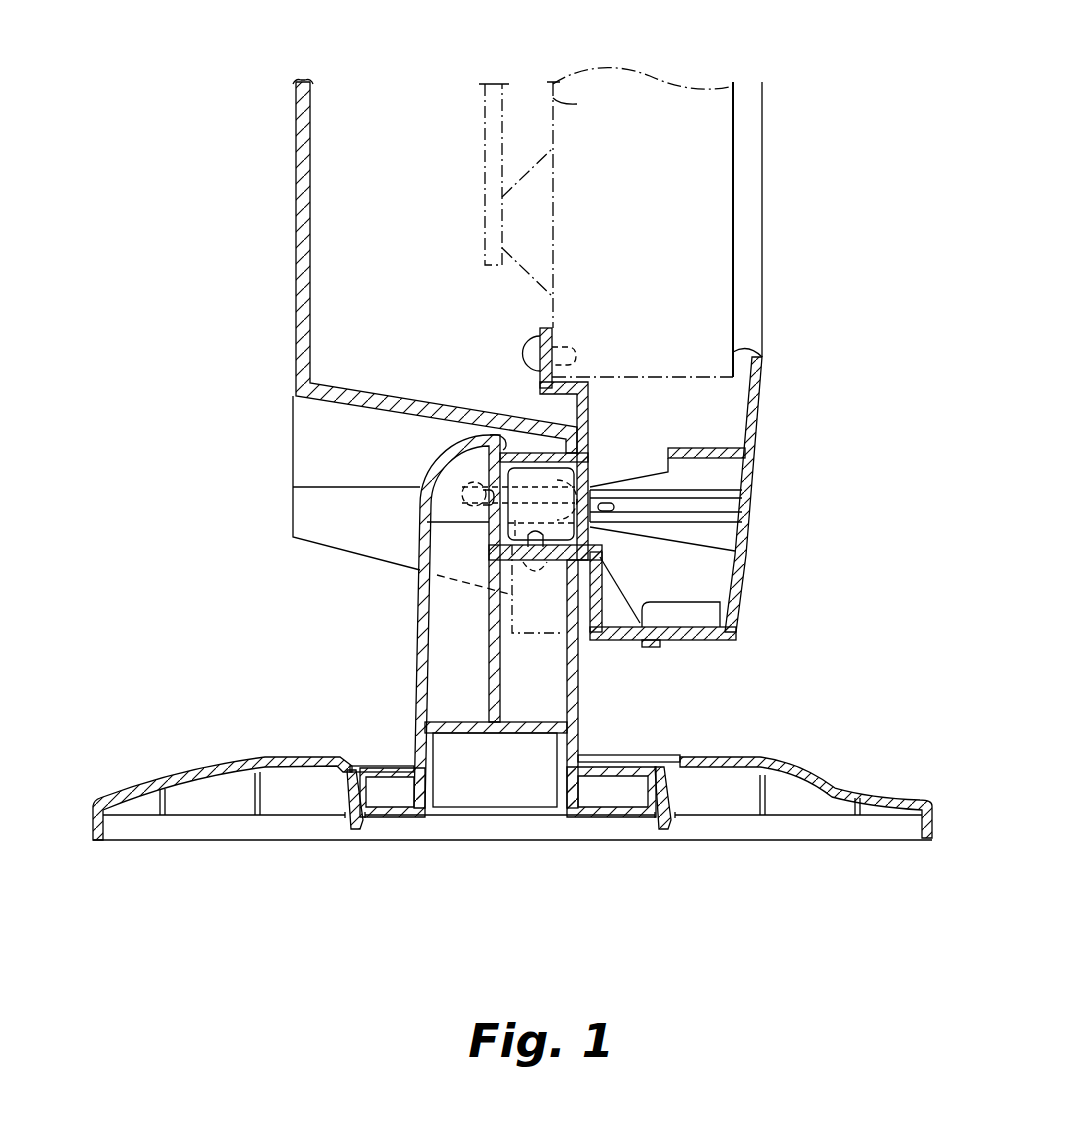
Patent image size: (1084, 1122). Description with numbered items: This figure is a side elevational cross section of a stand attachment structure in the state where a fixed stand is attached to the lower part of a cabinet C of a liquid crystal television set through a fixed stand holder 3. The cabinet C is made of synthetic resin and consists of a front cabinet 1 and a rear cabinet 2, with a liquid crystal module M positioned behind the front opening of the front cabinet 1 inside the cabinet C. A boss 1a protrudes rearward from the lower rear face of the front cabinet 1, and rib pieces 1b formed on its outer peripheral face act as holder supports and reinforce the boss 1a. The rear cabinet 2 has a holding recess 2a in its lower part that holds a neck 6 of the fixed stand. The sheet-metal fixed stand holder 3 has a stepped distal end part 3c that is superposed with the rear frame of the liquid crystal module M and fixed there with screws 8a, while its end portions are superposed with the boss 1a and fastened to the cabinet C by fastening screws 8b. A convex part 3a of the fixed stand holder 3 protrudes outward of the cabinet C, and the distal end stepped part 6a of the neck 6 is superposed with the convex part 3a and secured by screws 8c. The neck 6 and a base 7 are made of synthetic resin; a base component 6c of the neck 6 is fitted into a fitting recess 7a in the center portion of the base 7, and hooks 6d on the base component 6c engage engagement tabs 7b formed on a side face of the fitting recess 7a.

The front cabinet 1 is at (763, 390).
The boss 1a is at (700, 493).
The rib piece 1b is at (678, 503).
The rear cabinet 2 is at (297, 291).
The holding recess 2a is at (318, 443).
The fixed stand holder 3 is at (590, 418).
The convex part 3a is at (527, 450).
The stepped distal end part 3c is at (540, 330).
The neck 6 is at (418, 658).
The distal end stepped part 6a is at (503, 437).
The base component 6c is at (622, 762).
The hook 6d is at (347, 820).
The base 7 is at (238, 760).
The fitting recess 7a is at (602, 817).
The engagement tab 7b is at (340, 788).
The screw 8a is at (531, 340).
The fastening screw 8b is at (597, 477).
The screw 8c is at (480, 493).
The liquid crystal module M is at (547, 102).
The cabinet C is at (808, 152).